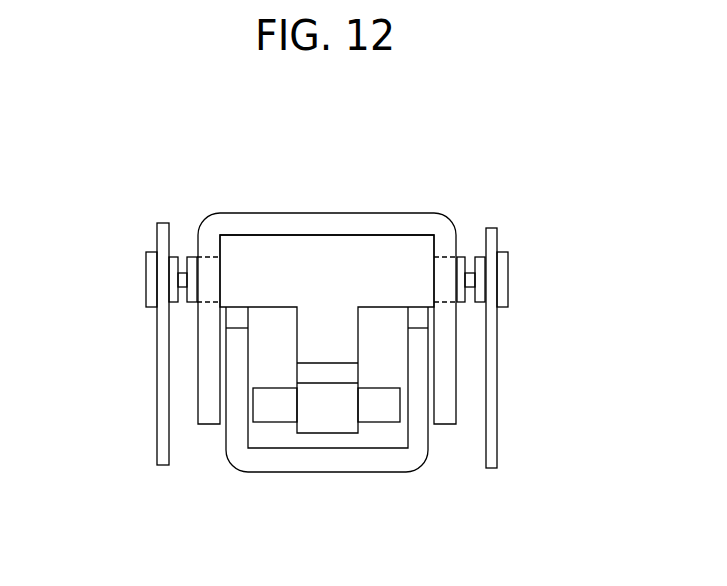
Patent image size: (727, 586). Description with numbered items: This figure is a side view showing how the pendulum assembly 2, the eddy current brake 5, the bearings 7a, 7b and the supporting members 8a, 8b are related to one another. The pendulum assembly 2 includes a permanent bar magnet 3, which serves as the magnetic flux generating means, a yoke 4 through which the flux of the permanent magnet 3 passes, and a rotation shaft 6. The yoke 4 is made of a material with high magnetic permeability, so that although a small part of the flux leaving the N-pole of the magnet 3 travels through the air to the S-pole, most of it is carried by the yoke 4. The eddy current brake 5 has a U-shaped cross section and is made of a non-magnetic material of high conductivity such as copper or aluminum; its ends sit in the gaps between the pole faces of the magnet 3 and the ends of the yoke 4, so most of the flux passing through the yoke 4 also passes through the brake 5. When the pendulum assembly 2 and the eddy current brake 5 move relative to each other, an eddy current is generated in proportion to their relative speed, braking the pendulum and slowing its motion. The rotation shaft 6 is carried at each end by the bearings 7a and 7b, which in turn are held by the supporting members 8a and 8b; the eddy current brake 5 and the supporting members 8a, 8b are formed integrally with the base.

The pendulum assembly 2 is at (353, 253).
The permanent bar magnet 3 is at (287, 412).
The yoke 4 is at (273, 227).
The eddy current brake 5 is at (373, 465).
The rotation shaft 6 is at (469, 273).
The bearing 7a is at (150, 267).
The bearing 7b is at (508, 265).
The supporting member 8a is at (162, 405).
The supporting member 8b is at (497, 403).